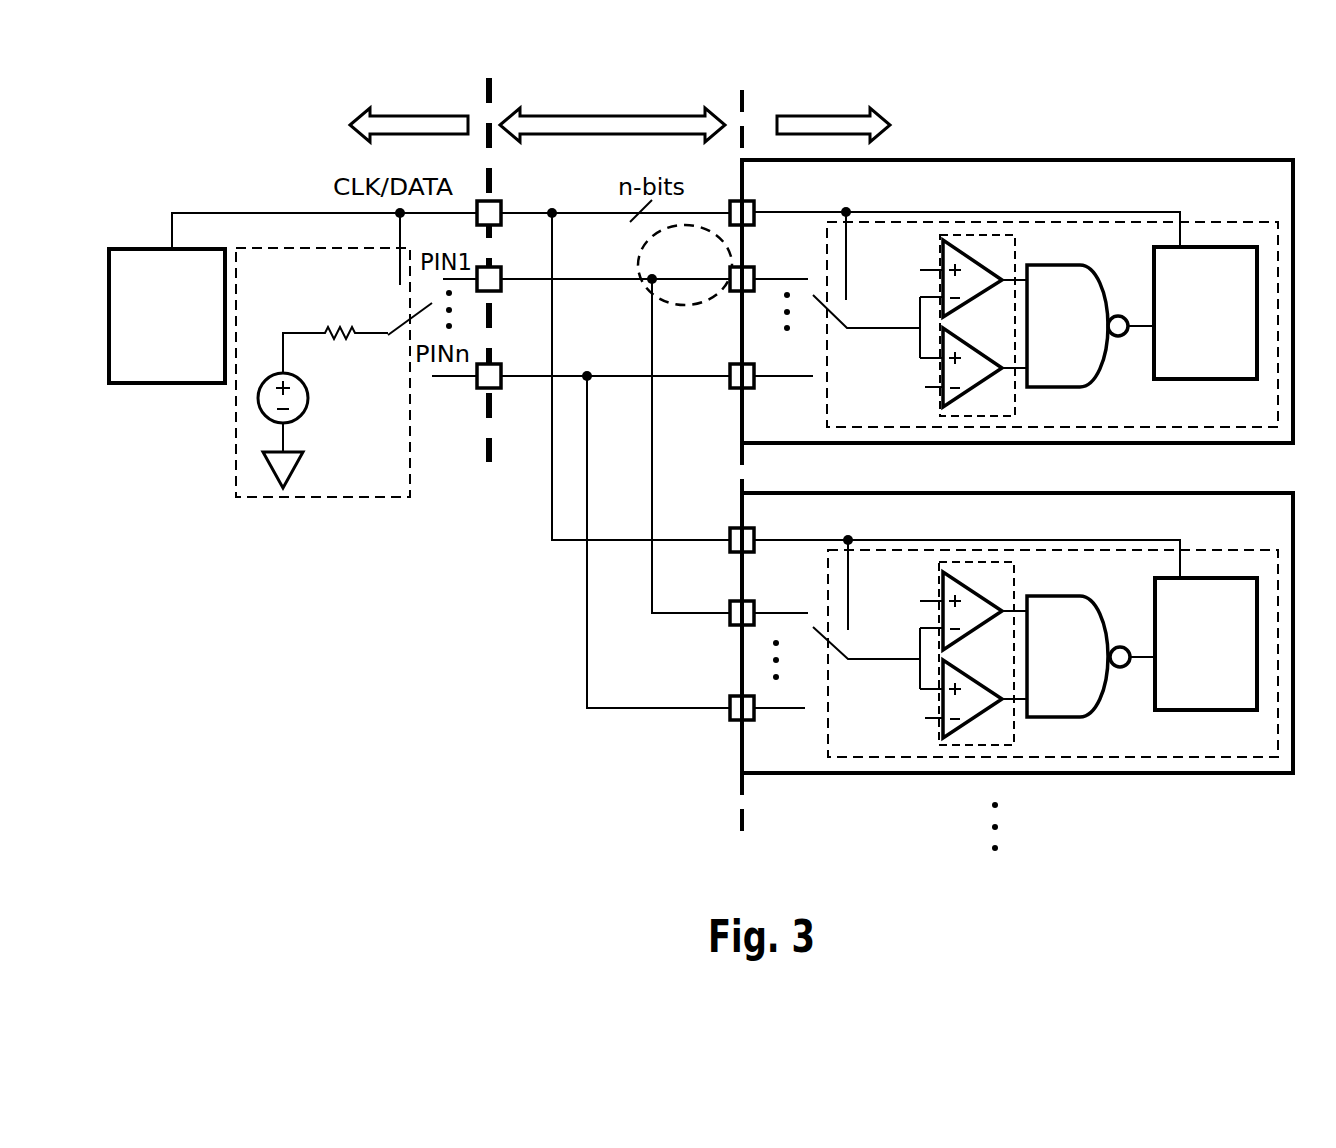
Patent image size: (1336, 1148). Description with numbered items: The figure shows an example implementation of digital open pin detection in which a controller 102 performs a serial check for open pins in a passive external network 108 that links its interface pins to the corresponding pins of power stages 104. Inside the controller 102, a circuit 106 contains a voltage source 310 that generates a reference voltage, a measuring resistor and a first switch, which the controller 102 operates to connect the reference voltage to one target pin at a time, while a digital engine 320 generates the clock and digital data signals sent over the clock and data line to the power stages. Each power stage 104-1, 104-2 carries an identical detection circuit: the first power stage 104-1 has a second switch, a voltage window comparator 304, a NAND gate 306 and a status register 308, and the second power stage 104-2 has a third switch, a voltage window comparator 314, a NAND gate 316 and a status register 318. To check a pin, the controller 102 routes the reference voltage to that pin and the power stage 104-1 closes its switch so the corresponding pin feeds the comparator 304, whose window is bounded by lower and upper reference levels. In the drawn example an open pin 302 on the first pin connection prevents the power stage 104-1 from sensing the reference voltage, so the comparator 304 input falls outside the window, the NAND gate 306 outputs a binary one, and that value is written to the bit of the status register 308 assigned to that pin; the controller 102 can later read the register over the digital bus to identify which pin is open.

The controller 102 is at (373, 109).
The power stages 104 is at (882, 106).
The first power stage 104-1 is at (1017, 301).
The second power stage 104-2 is at (981, 633).
The circuit 106 is at (289, 372).
The passive external network 108 is at (612, 92).
The open pin 302 is at (644, 276).
The voltage window comparator 304 is at (996, 232).
The NAND gate 306 is at (1108, 317).
The status register 308 is at (1205, 313).
The voltage source 310 is at (257, 398).
The voltage window comparator 314 is at (996, 562).
The NAND gate 316 is at (1108, 652).
The status register 318 is at (1206, 644).
The digital engine 320 is at (167, 316).